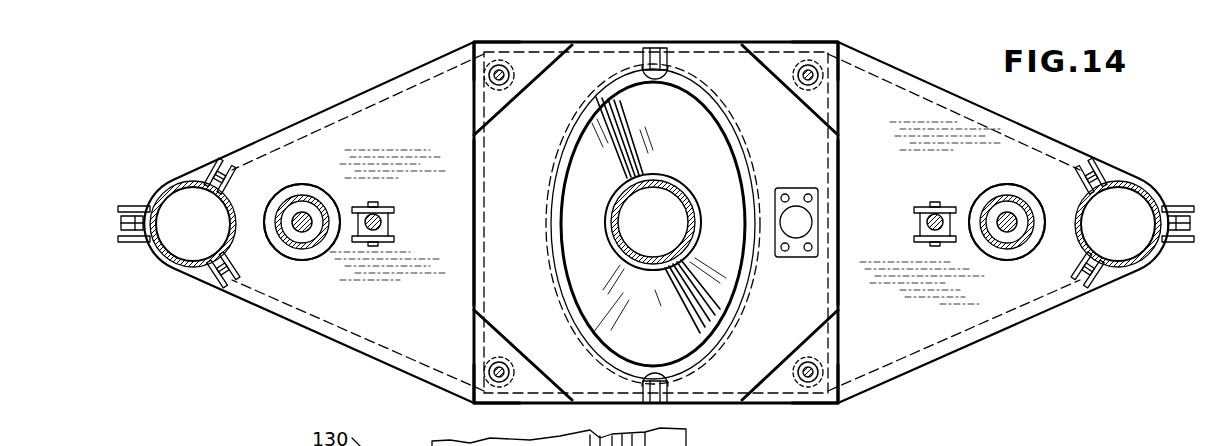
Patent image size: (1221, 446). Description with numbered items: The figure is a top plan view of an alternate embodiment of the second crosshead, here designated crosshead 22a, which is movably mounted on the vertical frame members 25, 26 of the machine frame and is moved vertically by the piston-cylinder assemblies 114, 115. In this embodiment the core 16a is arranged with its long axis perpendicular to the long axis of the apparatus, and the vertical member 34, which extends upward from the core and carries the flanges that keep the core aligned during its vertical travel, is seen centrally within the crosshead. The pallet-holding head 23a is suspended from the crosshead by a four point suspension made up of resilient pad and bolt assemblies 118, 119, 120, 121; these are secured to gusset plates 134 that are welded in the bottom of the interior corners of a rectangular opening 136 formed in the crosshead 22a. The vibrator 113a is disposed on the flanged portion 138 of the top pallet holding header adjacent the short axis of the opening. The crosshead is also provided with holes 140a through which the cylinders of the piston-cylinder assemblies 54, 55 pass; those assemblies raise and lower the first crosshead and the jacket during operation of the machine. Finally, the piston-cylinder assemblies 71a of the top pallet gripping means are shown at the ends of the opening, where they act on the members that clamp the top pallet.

The second crosshead 22a is at (303, 127).
The vertical frame member 25 is at (229, 231).
The vertical frame member 26 is at (1128, 256).
The piston-cylinder assembly 54 is at (298, 207).
The piston-cylinder assembly 55 is at (1012, 203).
The piston-cylinder assembly 114 is at (386, 223).
The piston-cylinder assembly 115 is at (918, 223).
The holes 140a is at (310, 251).
The resilient pad and bolt assembly 118 is at (472, 41).
The resilient pad and bolt assembly 119 is at (802, 48).
The resilient pad and bolt assembly 120 is at (470, 401).
The resilient pad and bolt assembly 121 is at (808, 392).
The gusset plates 134 is at (545, 76).
The rectangular opening 136 is at (477, 262).
The flanged portion 138 is at (805, 158).
The core 16a is at (588, 163).
The pallet-holding head 23a is at (540, 220).
The vertical member 34 is at (688, 193).
The piston-cylinder assemblies 71a is at (651, 78).
The vibrator 113a is at (800, 214).